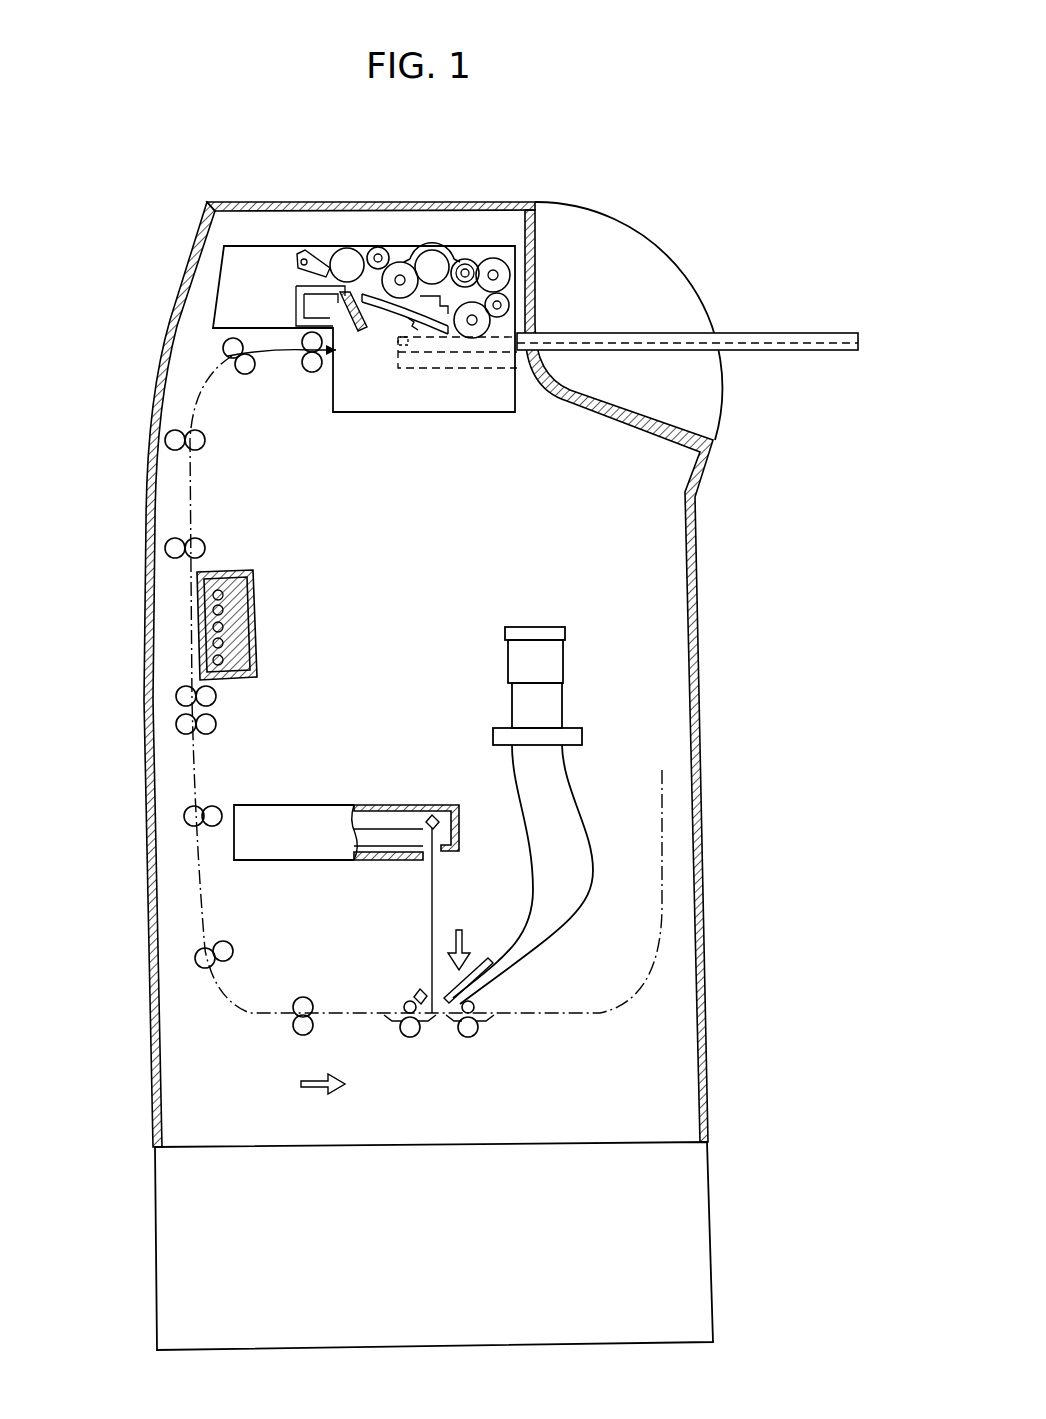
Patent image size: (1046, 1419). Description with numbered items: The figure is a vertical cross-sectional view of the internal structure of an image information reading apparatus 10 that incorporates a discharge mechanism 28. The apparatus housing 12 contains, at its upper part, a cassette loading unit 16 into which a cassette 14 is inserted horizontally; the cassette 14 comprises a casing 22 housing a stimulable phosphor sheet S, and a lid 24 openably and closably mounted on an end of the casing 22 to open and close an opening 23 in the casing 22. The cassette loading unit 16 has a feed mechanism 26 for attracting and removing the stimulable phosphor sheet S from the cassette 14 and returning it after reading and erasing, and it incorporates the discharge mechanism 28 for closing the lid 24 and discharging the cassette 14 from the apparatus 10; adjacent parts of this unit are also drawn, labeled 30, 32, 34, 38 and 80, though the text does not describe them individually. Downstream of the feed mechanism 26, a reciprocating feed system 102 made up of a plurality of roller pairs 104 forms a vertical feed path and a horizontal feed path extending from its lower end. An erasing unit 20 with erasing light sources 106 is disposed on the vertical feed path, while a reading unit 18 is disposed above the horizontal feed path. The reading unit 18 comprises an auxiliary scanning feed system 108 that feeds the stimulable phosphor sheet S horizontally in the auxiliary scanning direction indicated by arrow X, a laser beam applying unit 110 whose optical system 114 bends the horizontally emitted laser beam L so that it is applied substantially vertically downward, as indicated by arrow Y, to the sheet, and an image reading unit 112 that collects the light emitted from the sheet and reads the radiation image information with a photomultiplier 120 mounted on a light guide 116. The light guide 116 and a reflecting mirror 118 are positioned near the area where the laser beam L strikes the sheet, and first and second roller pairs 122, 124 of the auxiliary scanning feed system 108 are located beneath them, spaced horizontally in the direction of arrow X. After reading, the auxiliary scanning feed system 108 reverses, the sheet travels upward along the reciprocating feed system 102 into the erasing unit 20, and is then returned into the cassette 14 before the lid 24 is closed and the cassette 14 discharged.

The image information reading apparatus 10 is at (234, 143).
The apparatus housing 12 is at (705, 722).
The cassette 14 is at (775, 330).
The cassette loading unit 16 is at (667, 262).
The reading unit 18 is at (415, 786).
The erasing unit 20 is at (185, 625).
The casing 22 is at (828, 344).
The opening 23 is at (408, 330).
The lid 24 is at (422, 250).
The feed mechanism 26 is at (463, 240).
The discharge mechanism 28 is at (500, 327).
The cleaning member 30 is at (340, 345).
The frame bracket 32 is at (387, 333).
The lever 34 is at (332, 243).
The transfer roller 38 is at (515, 300).
The fixing roller 80 is at (472, 324).
The reciprocating feed system 102 is at (163, 538).
The roller pairs 104 is at (168, 437).
The erasing light sources 106 is at (224, 627).
The auxiliary scanning feed system 108 is at (441, 1048).
The laser beam applying unit 110 is at (358, 801).
The image reading unit 112 is at (502, 682).
The optical system 114 is at (436, 812).
The light guide 116 is at (518, 947).
The reflecting mirror 118 is at (417, 991).
The photomultiplier 120 is at (549, 665).
The first roller pair 122 is at (410, 1038).
The second roller pair 124 is at (470, 1038).
The laser beam L is at (432, 918).
The stimulable phosphor sheet S is at (760, 344).
The auxiliary scanning direction X is at (300, 1088).
The laser beam application direction Y is at (459, 938).